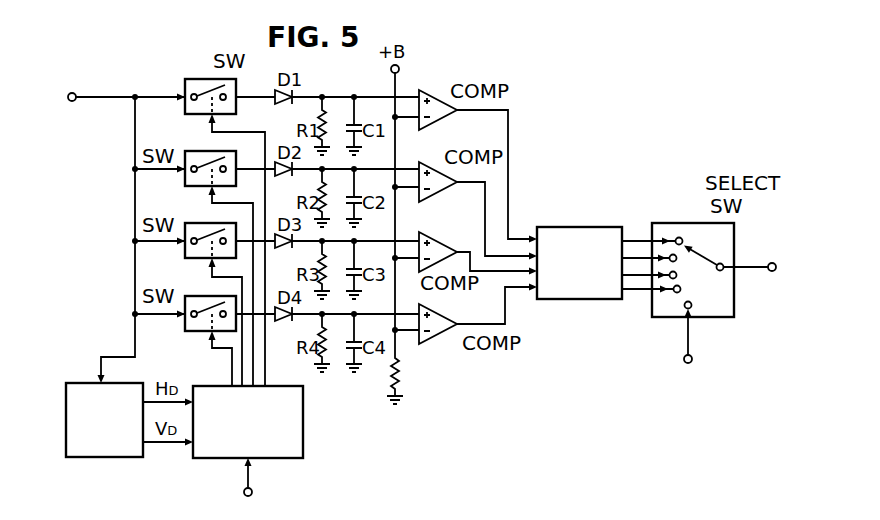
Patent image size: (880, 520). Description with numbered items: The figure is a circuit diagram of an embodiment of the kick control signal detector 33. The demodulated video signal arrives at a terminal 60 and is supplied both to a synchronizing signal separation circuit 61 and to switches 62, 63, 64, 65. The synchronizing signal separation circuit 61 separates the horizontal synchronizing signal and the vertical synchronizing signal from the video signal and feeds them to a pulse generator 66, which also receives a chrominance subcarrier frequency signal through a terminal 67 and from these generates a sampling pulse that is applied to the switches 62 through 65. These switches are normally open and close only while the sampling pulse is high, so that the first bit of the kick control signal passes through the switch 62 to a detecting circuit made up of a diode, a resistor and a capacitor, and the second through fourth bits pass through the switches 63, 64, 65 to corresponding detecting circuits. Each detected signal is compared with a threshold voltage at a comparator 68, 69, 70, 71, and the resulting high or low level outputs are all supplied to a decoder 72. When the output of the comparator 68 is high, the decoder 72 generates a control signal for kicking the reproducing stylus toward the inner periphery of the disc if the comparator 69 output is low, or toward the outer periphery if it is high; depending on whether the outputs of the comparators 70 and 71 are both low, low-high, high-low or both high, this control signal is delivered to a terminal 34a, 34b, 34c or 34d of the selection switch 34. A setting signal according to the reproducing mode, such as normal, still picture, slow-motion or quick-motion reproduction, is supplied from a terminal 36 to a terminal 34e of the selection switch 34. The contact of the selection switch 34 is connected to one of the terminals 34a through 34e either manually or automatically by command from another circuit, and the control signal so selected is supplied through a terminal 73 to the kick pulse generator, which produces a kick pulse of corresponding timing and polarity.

The kick control signal detector 33 is at (151, 66).
The terminal 60 is at (74, 92).
The synchronizing signal separation circuit 61 is at (81, 383).
The switch 62 is at (201, 78).
The switch 63 is at (191, 150).
The switch 64 is at (191, 223).
The switch 65 is at (191, 296).
The pulse generator 66 is at (303, 434).
The terminal 67 is at (252, 491).
The comparator 68 is at (440, 91).
The comparator 69 is at (440, 164).
The comparator 70 is at (436, 233).
The comparator 71 is at (424, 340).
The decoder 72 is at (573, 227).
The terminal 73 is at (771, 262).
The selection switch 34 is at (698, 223).
The terminal 34a is at (677, 237).
The terminal 34b is at (670, 255).
The terminal 34c is at (670, 278).
The terminal 34d is at (676, 293).
The terminal 34e is at (692, 307).
The terminal 36 is at (691, 363).